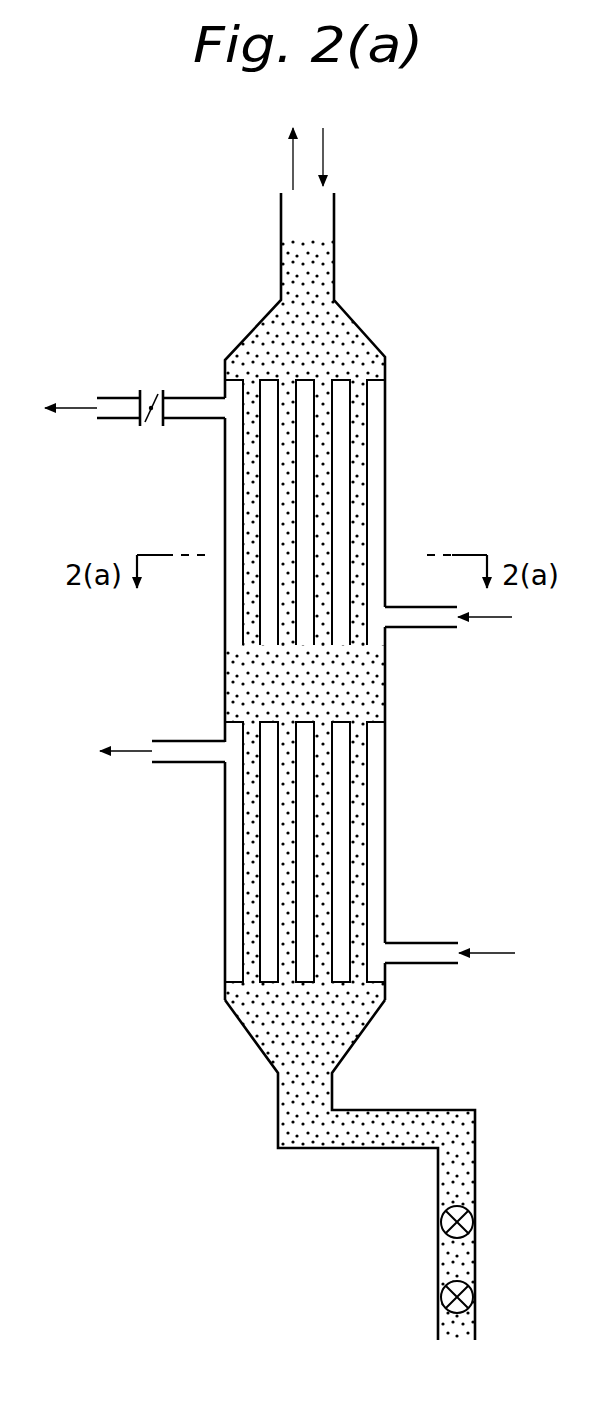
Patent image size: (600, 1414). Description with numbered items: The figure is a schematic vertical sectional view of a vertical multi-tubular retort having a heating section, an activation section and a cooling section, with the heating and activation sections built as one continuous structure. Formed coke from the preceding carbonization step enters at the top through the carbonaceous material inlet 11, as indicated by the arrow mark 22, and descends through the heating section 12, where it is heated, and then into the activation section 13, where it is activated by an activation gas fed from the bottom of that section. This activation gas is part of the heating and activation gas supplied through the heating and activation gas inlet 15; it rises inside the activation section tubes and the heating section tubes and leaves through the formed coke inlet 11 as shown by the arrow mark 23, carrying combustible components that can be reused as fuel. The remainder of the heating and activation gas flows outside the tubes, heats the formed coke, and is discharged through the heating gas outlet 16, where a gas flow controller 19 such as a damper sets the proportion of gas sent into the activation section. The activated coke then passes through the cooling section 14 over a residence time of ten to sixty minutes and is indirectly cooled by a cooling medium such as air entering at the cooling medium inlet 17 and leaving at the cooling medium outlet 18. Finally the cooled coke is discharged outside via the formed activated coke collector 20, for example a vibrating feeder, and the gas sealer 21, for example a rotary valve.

The carbonaceous material inlet 11 is at (308, 232).
The heating section 12 is at (365, 438).
The activation section 13 is at (365, 530).
The cooling section 14 is at (366, 843).
The heating and activation gas inlet 15 is at (420, 632).
The heating gas outlet 16 is at (190, 405).
The cooling medium inlet 17 is at (415, 950).
The cooling medium outlet 18 is at (187, 748).
The gas flow controller 19 is at (150, 420).
The formed activated coke collector 20 is at (397, 1120).
The gas sealer 21 is at (476, 1290).
The arrow mark 22 is at (345, 157).
The arrow mark 23 is at (270, 159).